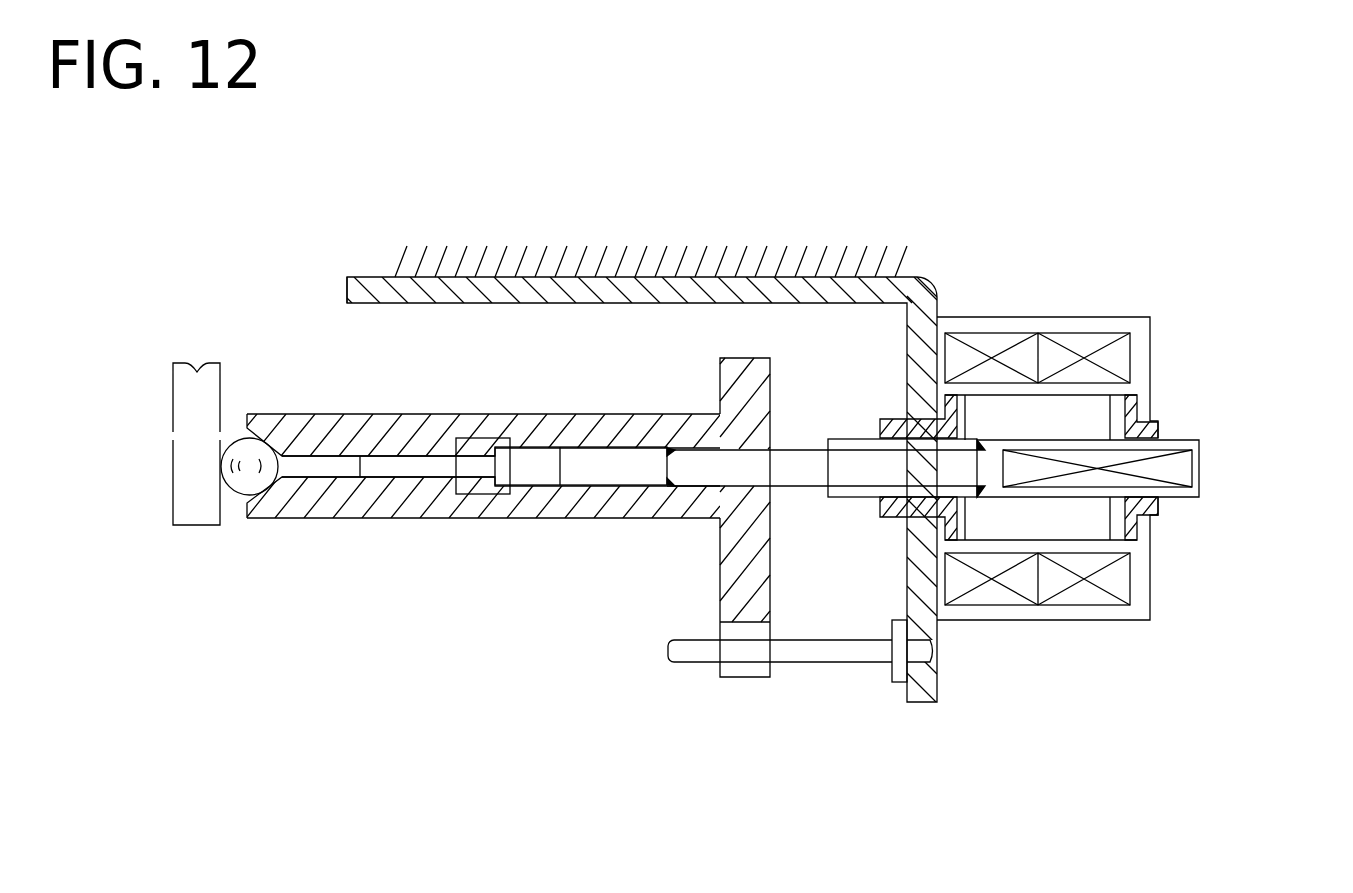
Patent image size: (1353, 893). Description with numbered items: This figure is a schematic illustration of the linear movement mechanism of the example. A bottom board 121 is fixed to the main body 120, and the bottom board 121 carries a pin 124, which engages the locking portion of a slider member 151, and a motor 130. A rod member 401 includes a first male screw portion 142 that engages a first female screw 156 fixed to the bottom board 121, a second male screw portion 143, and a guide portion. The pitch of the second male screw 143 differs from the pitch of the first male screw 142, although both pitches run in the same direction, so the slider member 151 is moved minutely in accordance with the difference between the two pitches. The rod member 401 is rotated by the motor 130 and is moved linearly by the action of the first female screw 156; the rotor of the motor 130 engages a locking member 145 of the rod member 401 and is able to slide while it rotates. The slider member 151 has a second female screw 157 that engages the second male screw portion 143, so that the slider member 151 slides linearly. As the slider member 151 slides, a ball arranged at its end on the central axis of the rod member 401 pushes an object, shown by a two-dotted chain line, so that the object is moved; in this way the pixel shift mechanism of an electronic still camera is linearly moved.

The main body 120 is at (590, 262).
The bottom board 121 is at (347, 297).
The pin 124 is at (817, 652).
The motor 130 is at (1070, 316).
The first male screw portion 142 is at (847, 438).
The second male screw portion 143 is at (602, 483).
The locking member 145 is at (1185, 468).
The slider member 151 is at (427, 502).
The first female screw 156 is at (898, 490).
The second female screw 157 is at (537, 482).
The rod member 401 is at (380, 465).